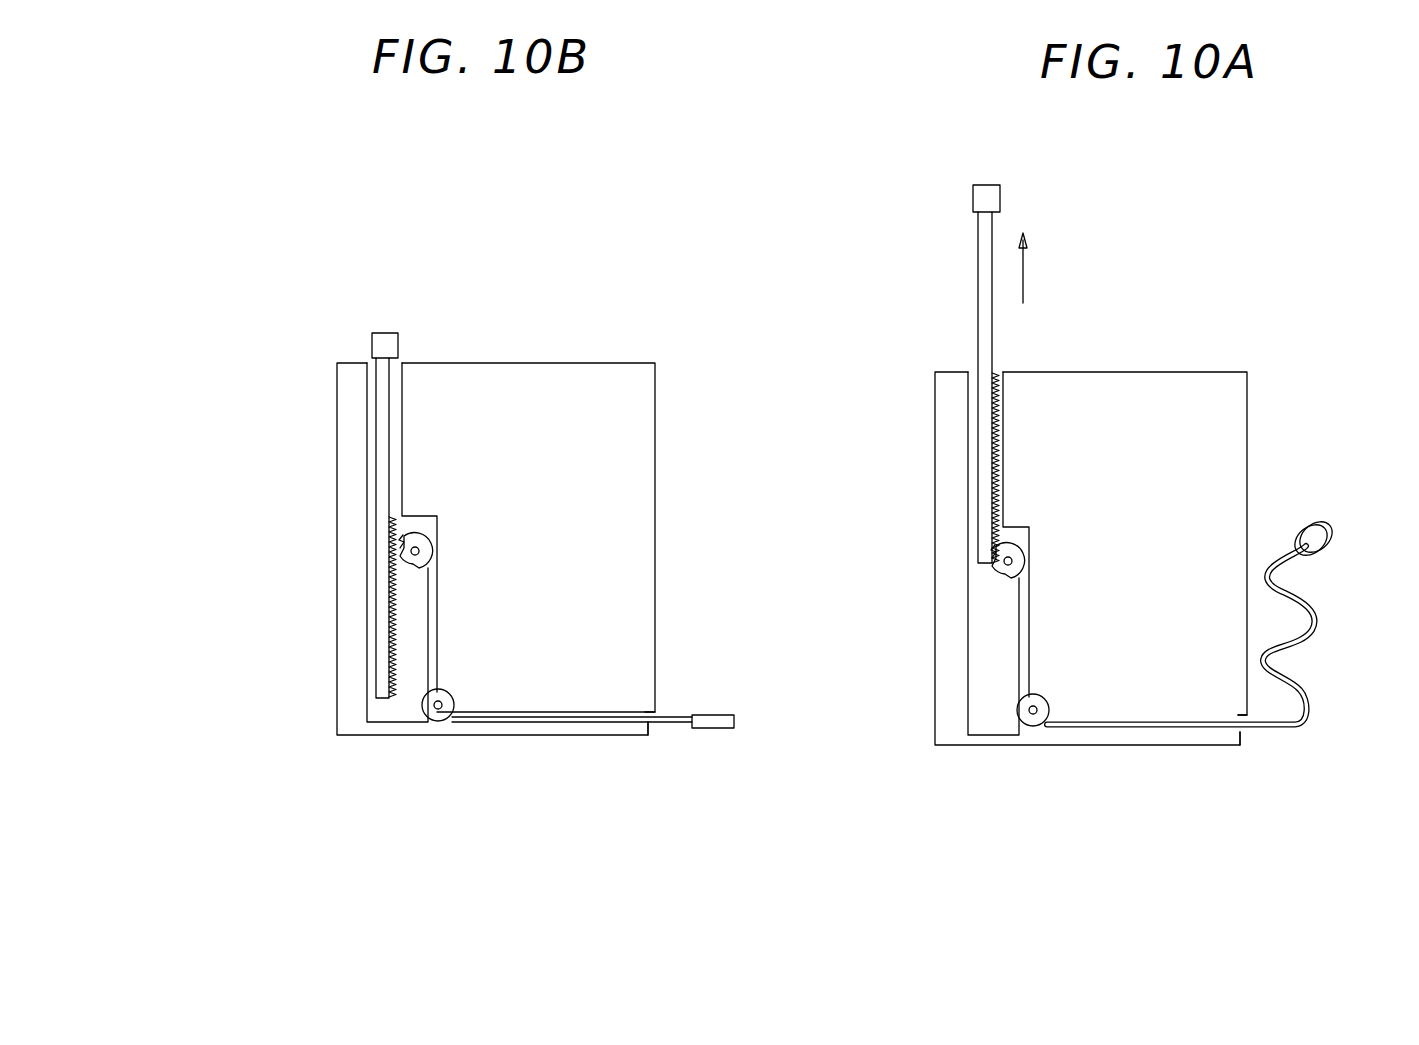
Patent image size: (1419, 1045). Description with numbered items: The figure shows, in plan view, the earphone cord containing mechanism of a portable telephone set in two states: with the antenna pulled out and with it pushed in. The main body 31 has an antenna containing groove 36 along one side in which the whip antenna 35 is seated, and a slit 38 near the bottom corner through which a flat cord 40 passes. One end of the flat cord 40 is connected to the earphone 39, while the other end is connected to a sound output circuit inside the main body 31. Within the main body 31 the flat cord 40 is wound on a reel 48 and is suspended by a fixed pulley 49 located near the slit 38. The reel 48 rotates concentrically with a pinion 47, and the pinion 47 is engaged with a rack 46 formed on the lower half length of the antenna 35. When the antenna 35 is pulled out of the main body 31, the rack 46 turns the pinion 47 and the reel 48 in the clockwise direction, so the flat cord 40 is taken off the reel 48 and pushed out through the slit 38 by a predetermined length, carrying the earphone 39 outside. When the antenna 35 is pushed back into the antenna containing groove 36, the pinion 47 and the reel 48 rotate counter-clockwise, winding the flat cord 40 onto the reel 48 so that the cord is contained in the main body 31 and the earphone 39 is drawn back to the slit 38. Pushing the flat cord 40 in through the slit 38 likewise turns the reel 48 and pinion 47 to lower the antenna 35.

In FIG. 10B, the main body 31 is at (549, 362).
In FIG. 10A, the main body 31 is at (1220, 373).
In FIG. 10B, the whip antenna 35 is at (384, 343).
In FIG. 10A, the whip antenna 35 is at (978, 250).
In FIG. 10B, the antenna containing groove 36 is at (368, 412).
In FIG. 10A, the antenna containing groove 36 is at (966, 415).
In FIG. 10B, the slit 38 is at (638, 712).
In FIG. 10A, the slit 38 is at (1247, 732).
In FIG. 10B, the earphone 39 is at (708, 715).
In FIG. 10A, the earphone 39 is at (1305, 520).
In FIG. 10B, the flat cord 40 is at (603, 730).
In FIG. 10A, the flat cord 40 is at (1185, 730).
In FIG. 10B, the rack 46 is at (390, 617).
In FIG. 10A, the rack 46 is at (1023, 405).
In FIG. 10B, the pinion 47 is at (400, 560).
In FIG. 10A, the pinion 47 is at (998, 574).
In FIG. 10B, the reel 48 is at (407, 535).
In FIG. 10A, the reel 48 is at (978, 560).
In FIG. 10B, the fixed pulley 49 is at (438, 722).
In FIG. 10A, the fixed pulley 49 is at (1033, 726).